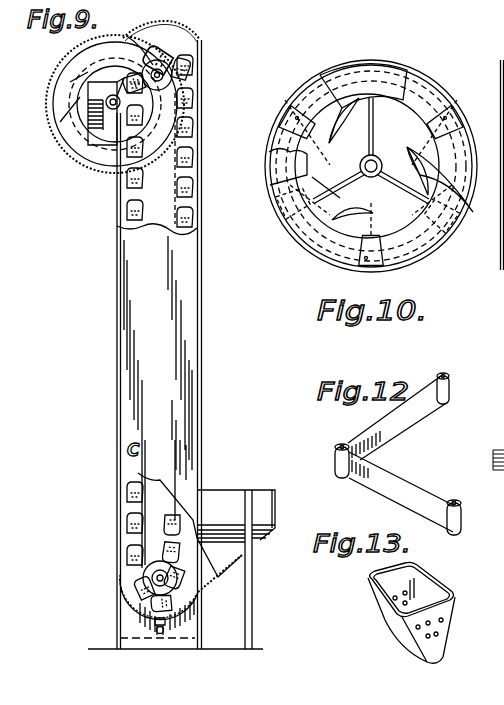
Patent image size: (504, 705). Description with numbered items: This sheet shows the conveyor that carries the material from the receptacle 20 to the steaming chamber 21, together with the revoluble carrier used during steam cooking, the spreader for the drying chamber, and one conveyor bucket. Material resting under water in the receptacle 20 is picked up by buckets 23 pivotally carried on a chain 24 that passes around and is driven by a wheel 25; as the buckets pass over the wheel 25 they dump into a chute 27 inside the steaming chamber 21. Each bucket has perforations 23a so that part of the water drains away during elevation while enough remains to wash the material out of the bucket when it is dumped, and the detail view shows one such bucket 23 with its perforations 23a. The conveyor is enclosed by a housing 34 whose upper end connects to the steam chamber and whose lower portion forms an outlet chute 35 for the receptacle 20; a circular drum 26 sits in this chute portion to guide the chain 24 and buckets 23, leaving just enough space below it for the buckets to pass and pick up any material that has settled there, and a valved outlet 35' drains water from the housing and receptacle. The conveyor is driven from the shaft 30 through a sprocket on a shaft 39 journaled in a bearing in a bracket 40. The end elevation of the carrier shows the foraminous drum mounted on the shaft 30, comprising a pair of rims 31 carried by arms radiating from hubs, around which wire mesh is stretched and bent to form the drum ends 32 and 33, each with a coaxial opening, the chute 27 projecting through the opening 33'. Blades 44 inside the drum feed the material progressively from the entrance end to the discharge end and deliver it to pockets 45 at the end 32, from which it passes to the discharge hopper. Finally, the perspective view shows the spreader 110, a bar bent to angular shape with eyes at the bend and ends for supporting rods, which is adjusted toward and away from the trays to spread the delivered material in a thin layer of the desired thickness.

In FIG. 9, the receptacle 20 is at (222, 503).
In FIG. 9, the steaming chamber 21 is at (67, 130).
In FIG. 9, the buckets 23 is at (187, 148).
In FIG. 13, the buckets 23 is at (367, 582).
In FIG. 9, the perforations 23a is at (192, 163).
In FIG. 13, the perforations 23a is at (445, 625).
In FIG. 9, the chain 24 is at (201, 200).
In FIG. 9, the wheel 25 is at (163, 77).
In FIG. 9, the circular drum 26 is at (140, 608).
In FIG. 9, the chute 27 is at (92, 118).
In FIG. 9, the shaft 30 is at (57, 82).
In FIG. 10, the rims 31 is at (415, 262).
In FIG. 9, the end of the drum 32 is at (117, 133).
In FIG. 10, the end of the drum 32 is at (312, 100).
In FIG. 9, the end of the drum 33 is at (93, 97).
In FIG. 10, the end of the drum 33 is at (363, 82).
In FIG. 9, the opening 33' is at (185, 130).
In FIG. 10, the opening 33' is at (385, 187).
In FIG. 9, the housing 34 is at (185, 324).
In FIG. 9, the outlet chute 35 is at (178, 617).
In FIG. 9, the valved outlet 35' is at (148, 646).
In FIG. 9, the shaft 39 is at (167, 53).
In FIG. 9, the bracket 40 is at (140, 48).
In FIG. 10, the blades 44 is at (355, 127).
In FIG. 10, the pockets 45 is at (292, 100).
In FIG. 12, the spreader 110 is at (415, 480).